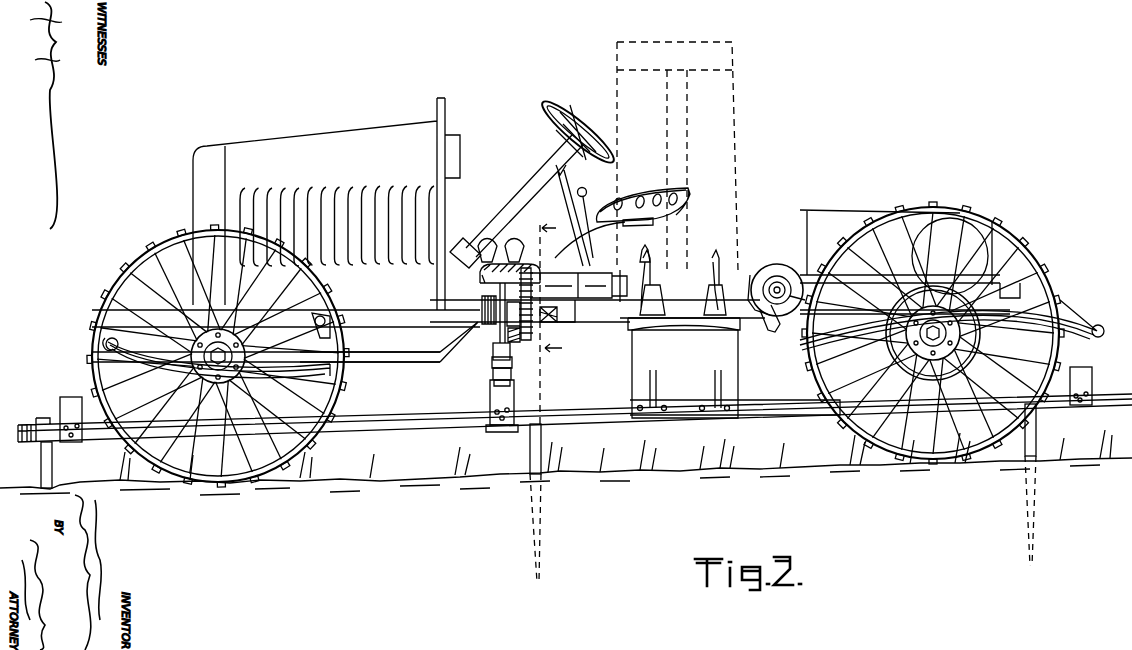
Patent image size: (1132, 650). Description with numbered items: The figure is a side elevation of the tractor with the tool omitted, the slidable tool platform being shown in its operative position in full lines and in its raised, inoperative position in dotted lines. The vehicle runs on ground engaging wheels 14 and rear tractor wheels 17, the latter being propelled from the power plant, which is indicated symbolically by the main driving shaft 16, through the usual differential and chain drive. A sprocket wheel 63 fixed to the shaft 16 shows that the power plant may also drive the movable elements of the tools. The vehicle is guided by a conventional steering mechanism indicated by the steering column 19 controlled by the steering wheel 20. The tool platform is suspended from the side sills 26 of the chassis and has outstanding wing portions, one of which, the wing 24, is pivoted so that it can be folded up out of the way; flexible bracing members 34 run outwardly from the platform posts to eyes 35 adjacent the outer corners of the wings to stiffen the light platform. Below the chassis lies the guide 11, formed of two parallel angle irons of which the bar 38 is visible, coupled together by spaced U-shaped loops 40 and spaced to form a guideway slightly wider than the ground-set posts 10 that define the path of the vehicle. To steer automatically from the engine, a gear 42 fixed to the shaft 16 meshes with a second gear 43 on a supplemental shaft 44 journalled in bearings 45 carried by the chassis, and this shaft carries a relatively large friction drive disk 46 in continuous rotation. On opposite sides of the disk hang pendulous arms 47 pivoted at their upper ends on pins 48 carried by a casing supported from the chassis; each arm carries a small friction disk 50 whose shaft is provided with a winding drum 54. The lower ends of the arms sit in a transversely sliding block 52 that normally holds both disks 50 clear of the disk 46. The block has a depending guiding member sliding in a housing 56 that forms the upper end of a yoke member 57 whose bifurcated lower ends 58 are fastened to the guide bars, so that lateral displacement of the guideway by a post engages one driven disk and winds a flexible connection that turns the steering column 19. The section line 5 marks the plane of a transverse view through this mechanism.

The section line 5- 5 is at (545, 295).
The posts 10 is at (52, 468).
The guide 11 is at (768, 405).
The ground engaging wheels 14 is at (320, 305).
The main driving shaft 16 is at (570, 262).
The rear tractor wheels 17 is at (985, 224).
The steering column 19 is at (470, 245).
The steering wheel 20 is at (582, 108).
The wing portion 24 is at (730, 150).
The side sills 26 is at (435, 340).
The flexible bracing members 34 is at (668, 275).
The eyes 35 is at (648, 332).
The angle iron 38 is at (408, 422).
The U-shaped loops 40 is at (70, 398).
The gear 42 is at (578, 287).
The second gear 43 is at (522, 330).
The supplemental shaft 44 is at (559, 312).
The bearings 45 is at (558, 325).
The friction drive disk 46 is at (528, 311).
The pendulous arms 47 is at (511, 354).
The pins 48 is at (480, 283).
The friction disk 50 is at (498, 330).
The transversely sliding block 52 is at (492, 360).
The winding drum 54 is at (481, 300).
The housing 56 is at (492, 372).
The yoke member 57 is at (493, 383).
The lower bifurcated ends 58 is at (496, 392).
The sprocket wheel 63 is at (607, 248).